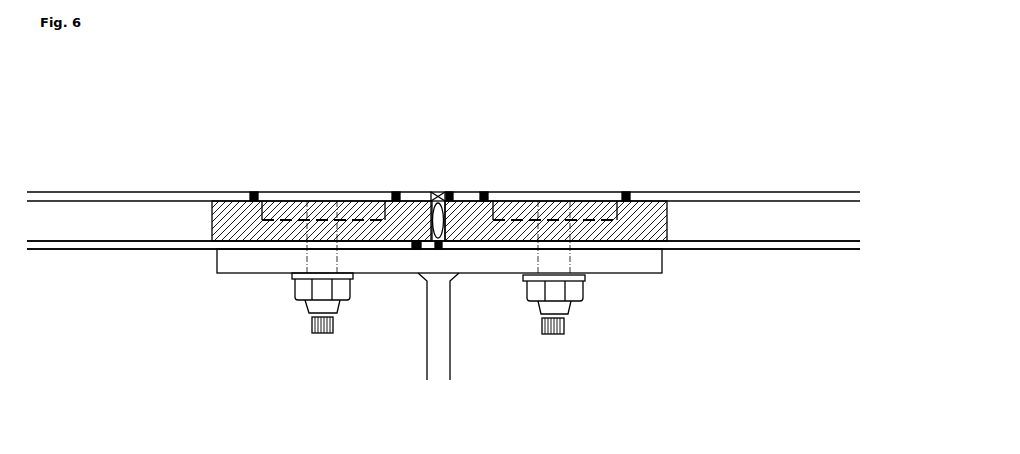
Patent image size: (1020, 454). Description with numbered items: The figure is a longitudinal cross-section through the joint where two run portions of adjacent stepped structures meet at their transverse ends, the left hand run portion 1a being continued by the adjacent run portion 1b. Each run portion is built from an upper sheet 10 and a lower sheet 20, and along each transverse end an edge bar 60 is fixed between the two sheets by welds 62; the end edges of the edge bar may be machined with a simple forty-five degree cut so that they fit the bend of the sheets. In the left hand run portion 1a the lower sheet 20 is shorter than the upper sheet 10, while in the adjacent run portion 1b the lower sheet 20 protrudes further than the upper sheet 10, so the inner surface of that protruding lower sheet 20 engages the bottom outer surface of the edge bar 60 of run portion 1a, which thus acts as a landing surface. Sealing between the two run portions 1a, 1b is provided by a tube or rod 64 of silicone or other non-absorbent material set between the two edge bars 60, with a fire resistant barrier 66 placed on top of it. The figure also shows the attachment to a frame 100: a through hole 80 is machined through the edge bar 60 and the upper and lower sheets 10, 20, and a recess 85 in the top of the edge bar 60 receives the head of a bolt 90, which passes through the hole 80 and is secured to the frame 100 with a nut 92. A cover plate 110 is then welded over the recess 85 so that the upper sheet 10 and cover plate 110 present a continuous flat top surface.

The left hand run portion 1a is at (183, 117).
The adjacent run portion 1b is at (672, 112).
The upper sheet 10 is at (104, 191).
The lower sheet 20 is at (116, 250).
The edge bar 60 is at (243, 215).
The weld 62 is at (432, 196).
The tube or rod 64 is at (445, 224).
The fire resistant barrier 66 is at (443, 195).
The through hole 80 is at (532, 232).
The recess 85 is at (283, 200).
The bolt 90 is at (322, 260).
The nut 92 is at (318, 295).
The frame 100 is at (228, 262).
The cover plate 110 is at (586, 196).